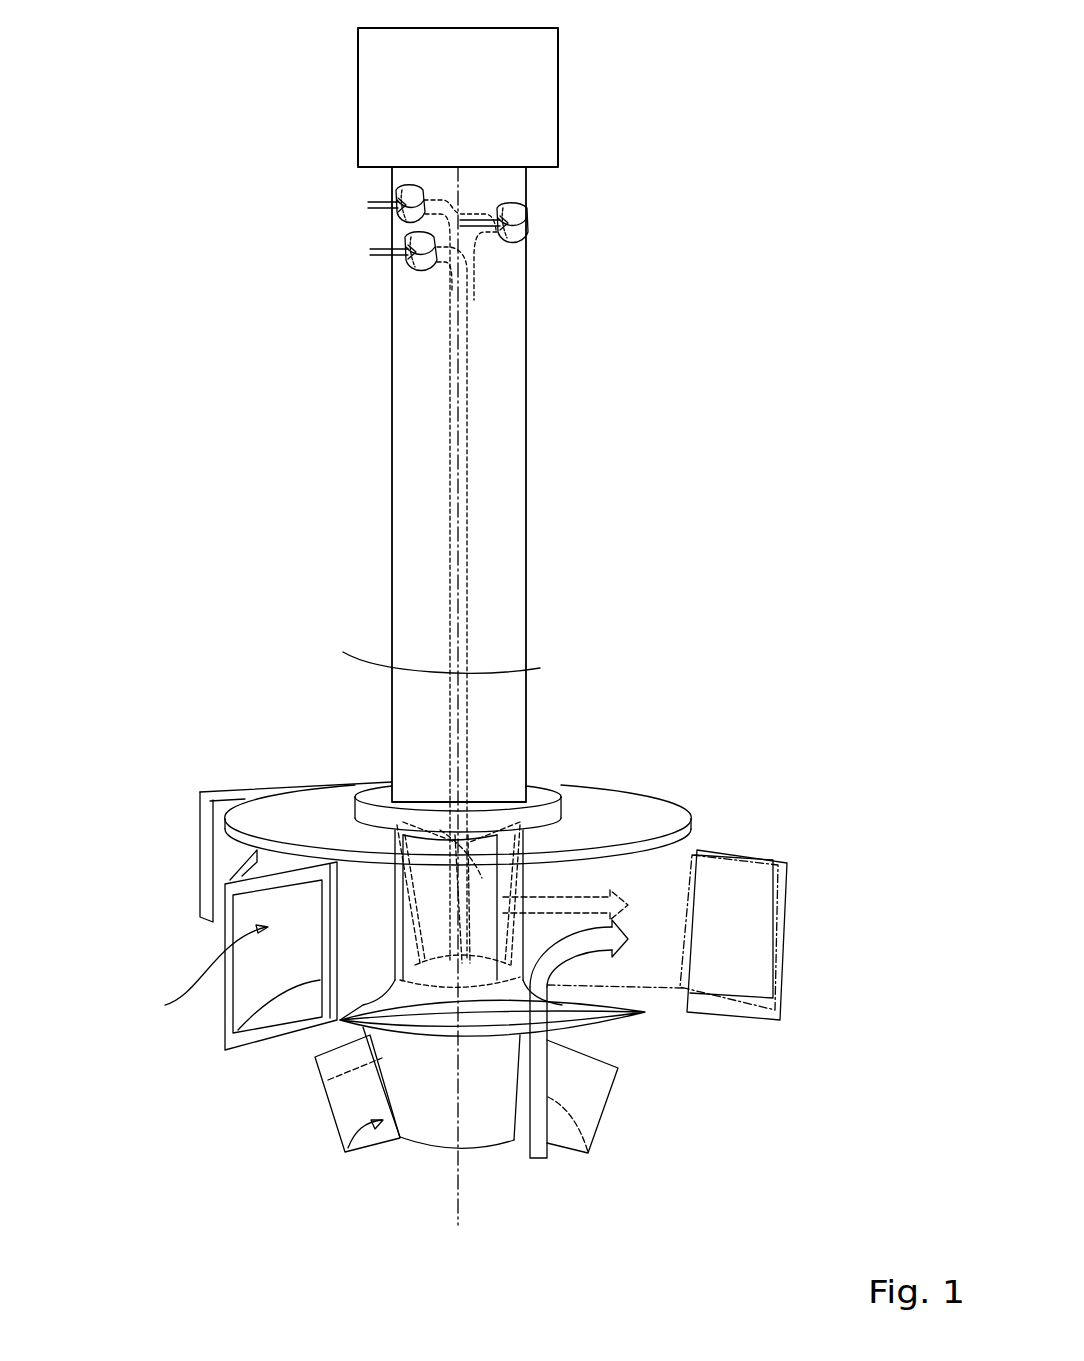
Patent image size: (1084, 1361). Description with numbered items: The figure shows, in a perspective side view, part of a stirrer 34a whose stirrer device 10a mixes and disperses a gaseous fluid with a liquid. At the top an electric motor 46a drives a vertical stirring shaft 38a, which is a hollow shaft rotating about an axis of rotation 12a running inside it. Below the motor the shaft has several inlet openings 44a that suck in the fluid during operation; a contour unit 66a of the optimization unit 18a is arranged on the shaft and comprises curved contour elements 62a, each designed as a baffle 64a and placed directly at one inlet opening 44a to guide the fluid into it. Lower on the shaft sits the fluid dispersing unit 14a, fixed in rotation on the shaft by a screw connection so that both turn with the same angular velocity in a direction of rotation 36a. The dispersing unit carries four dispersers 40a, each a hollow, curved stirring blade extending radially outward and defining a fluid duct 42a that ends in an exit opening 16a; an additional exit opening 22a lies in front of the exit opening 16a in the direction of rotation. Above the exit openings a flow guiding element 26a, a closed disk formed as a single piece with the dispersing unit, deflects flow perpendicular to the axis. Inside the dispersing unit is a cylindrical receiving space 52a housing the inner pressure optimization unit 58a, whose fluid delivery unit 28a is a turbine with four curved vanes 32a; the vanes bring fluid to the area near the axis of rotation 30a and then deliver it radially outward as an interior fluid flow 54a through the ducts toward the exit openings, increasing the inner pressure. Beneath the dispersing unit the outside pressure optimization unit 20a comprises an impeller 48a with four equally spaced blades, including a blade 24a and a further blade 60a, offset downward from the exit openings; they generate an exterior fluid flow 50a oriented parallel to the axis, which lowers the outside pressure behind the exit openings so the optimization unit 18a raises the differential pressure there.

The stirrer device 10a is at (586, 187).
The axis of rotation 12a is at (460, 1197).
The fluid dispersing unit 14a is at (156, 835).
The exit opening 16a is at (262, 977).
The optimization unit 18a is at (737, 724).
The outside pressure optimization unit 20a is at (347, 1148).
The additional exit opening 22a is at (791, 908).
The blade 24a is at (617, 1090).
The flow guiding element 26a is at (333, 800).
The fluid delivery unit 28a is at (531, 847).
The axis of rotation 30a is at (528, 819).
The vane 32a is at (560, 858).
The stirrer 34a is at (680, 76).
The direction of rotation 36a is at (388, 633).
The stirring shaft 38a is at (526, 432).
The disperser 40a is at (257, 868).
The fluid duct 42a is at (190, 972).
The inlet opening 44a is at (525, 230).
The electric motor 46a is at (395, 97).
The impeller 48a is at (408, 1055).
The exterior fluid flow 50a is at (548, 1150).
The receiving space 52a is at (385, 838).
The interior fluid flow 54a is at (625, 914).
The inner pressure optimization unit 58a is at (549, 749).
The further blade 60a is at (333, 1110).
The contour element 62a is at (522, 210).
The baffle 64a is at (403, 251).
The contour unit 66a is at (612, 250).